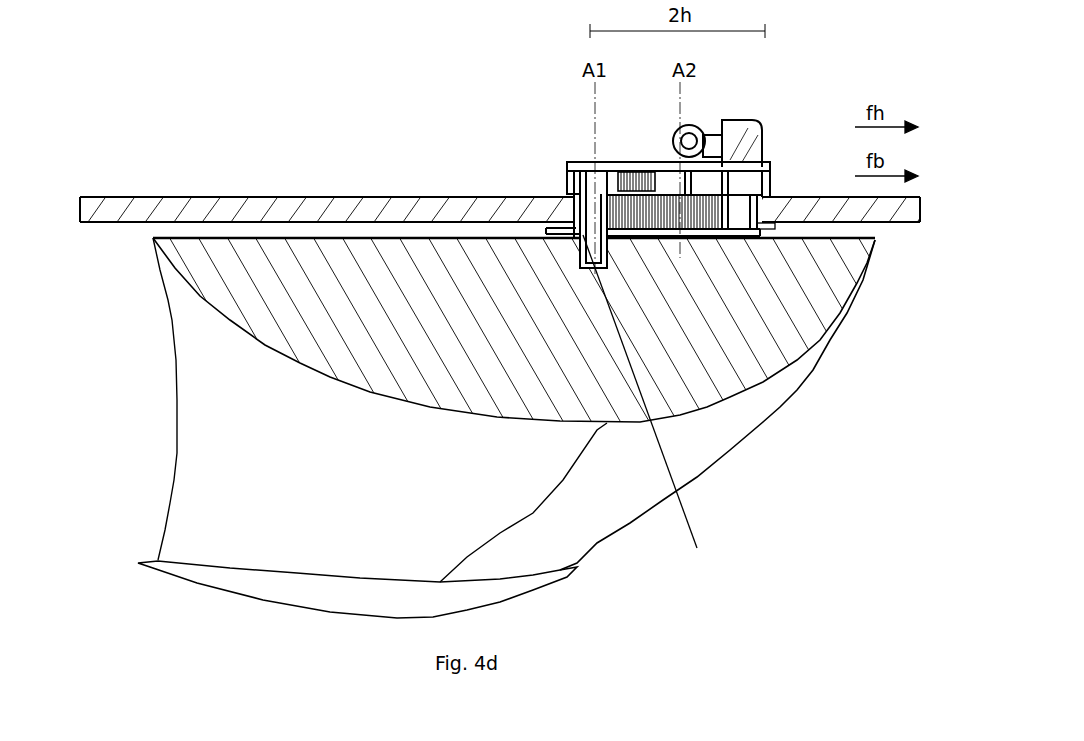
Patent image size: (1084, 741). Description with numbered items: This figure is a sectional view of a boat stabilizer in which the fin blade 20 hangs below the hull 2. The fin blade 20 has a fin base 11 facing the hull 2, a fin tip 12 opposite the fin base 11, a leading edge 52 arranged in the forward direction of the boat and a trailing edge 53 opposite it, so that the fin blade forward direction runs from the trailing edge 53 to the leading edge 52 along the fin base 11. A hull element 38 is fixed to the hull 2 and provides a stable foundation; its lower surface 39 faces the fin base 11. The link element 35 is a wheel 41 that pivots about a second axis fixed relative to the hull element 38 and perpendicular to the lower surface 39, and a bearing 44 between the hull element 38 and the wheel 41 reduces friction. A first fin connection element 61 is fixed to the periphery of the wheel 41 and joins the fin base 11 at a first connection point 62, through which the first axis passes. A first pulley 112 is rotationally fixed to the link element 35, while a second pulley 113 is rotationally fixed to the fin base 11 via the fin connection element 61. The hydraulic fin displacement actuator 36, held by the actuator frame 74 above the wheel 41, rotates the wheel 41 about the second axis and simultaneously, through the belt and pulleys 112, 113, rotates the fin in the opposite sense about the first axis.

The hull 2 is at (160, 208).
The fin base 11 is at (831, 255).
The fin tip 12 is at (277, 597).
The fin blade 20 is at (712, 468).
The link element 35 is at (689, 249).
The wheel 41 is at (704, 218).
The fin displacement actuator 36 is at (706, 130).
The hull element 38 is at (564, 182).
The lower surface 39 is at (697, 548).
The bearing 44 is at (573, 221).
The leading edge 52 is at (876, 241).
The trailing edge 53 is at (152, 239).
The first fin connection element 61 is at (570, 335).
The first connection point 62 is at (706, 390).
The actuator frame 74 is at (590, 180).
The first pulley 112 is at (668, 182).
The second pulley 113 is at (584, 205).